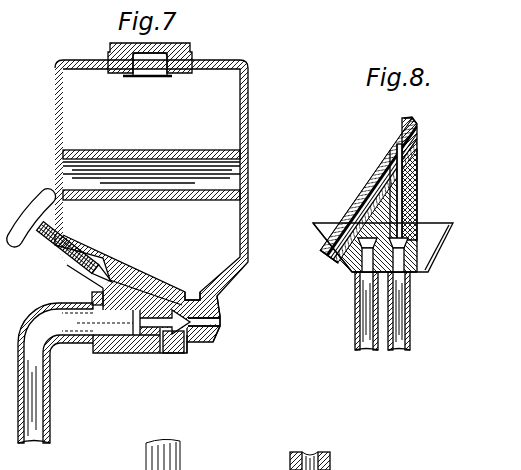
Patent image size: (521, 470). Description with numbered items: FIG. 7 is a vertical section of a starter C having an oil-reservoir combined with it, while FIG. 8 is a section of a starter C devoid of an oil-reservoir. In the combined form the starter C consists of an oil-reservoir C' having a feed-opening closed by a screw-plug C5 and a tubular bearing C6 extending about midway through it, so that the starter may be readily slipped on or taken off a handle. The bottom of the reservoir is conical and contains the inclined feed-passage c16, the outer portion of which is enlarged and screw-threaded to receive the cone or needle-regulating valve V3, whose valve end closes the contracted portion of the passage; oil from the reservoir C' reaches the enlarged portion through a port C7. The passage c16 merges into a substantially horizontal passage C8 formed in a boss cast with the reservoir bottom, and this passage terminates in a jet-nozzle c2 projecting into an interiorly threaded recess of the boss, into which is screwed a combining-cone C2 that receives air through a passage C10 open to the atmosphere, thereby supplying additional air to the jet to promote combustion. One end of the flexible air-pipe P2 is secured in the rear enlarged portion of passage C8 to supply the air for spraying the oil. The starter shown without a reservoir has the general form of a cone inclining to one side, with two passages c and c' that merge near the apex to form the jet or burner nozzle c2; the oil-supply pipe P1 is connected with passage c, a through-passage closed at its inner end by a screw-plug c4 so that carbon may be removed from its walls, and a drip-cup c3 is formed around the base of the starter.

In FIG. 7, the starter C is at (124, 207).
In FIG. 8, the starter C is at (383, 211).
In FIG. 7, the oil-reservoir C' is at (151, 109).
In FIG. 7, the screw-plug C5 is at (112, 48).
In FIG. 7, the tubular bearing C6 is at (187, 160).
In FIG. 7, the port C7 is at (112, 280).
In FIG. 7, the inclined feed-passage c16 is at (141, 281).
In FIG. 7, the horizontal passage C8 is at (180, 303).
In FIG. 7, the jet-nozzle c2 is at (213, 314).
In FIG. 8, the jet-nozzle c2 is at (410, 119).
In FIG. 7, the combining-cone C2 is at (211, 331).
In FIG. 7, the air passage C10 is at (167, 345).
In FIG. 7, the needle-regulating valve V3 is at (43, 253).
In FIG. 7, the air-pipe P2 is at (50, 403).
In FIG. 8, the air-pipe P2 is at (403, 318).
In FIG. 8, the oil-supply pipe P1 is at (357, 316).
In FIG. 8, the through-passage c is at (375, 190).
In FIG. 8, the passage c' is at (386, 195).
In FIG. 8, the drip-cup c3 is at (323, 228).
In FIG. 8, the screw-plug c4 is at (329, 258).